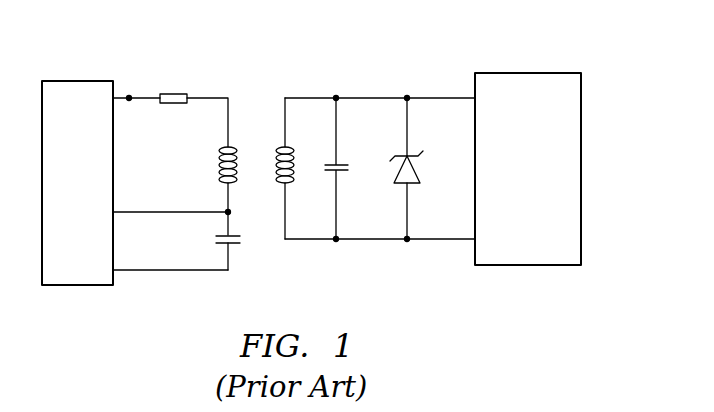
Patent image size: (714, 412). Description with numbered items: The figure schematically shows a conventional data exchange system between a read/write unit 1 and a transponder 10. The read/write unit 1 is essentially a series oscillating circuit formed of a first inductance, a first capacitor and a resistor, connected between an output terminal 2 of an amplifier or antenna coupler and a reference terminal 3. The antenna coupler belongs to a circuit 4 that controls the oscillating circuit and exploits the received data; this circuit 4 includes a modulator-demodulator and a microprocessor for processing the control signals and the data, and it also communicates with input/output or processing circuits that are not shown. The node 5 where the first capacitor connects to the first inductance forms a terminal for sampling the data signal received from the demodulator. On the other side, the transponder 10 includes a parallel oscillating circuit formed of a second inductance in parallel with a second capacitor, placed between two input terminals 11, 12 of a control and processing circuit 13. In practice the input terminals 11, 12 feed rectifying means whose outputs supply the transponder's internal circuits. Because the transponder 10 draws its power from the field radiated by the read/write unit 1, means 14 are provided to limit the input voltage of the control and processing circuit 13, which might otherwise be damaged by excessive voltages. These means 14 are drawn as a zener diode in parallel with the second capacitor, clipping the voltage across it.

The read/write unit 1 is at (176, 143).
The output terminal 2 is at (129, 98).
The reference terminal 3 is at (137, 270).
The control circuit 4 is at (80, 81).
The node 5 is at (228, 212).
The transponder 10 is at (368, 160).
The input terminal 11 is at (336, 98).
The input terminal 12 is at (336, 240).
The control and processing circuit 13 is at (582, 118).
The voltage limiting means 14 is at (416, 166).